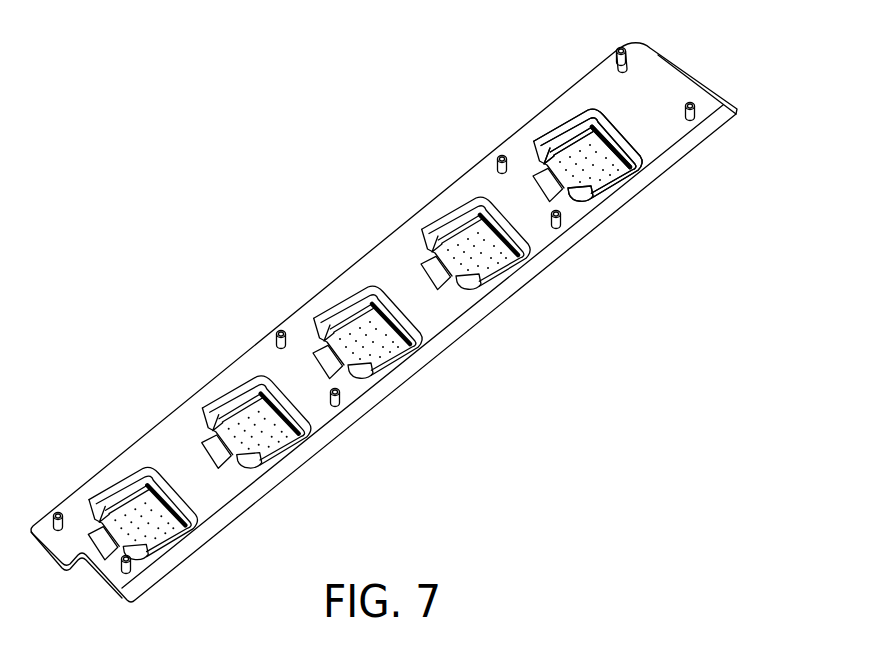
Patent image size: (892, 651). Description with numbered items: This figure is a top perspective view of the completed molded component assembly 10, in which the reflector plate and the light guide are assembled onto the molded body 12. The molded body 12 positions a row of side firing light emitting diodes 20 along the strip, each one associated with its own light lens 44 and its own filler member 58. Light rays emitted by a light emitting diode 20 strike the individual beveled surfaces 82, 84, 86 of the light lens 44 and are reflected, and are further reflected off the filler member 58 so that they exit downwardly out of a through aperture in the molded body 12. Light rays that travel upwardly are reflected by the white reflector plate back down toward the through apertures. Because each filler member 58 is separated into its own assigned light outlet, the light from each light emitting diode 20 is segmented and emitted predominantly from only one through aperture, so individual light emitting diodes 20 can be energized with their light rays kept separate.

The molded component assembly 10 is at (720, 52).
The molded body 12 is at (388, 383).
The side firing light emitting diode 20 is at (547, 176).
The light lens 44 is at (592, 125).
The filler member 58 is at (625, 157).
The beveled surface 82 is at (637, 143).
The beveled surface 84 is at (568, 147).
The beveled surface 86 is at (600, 195).